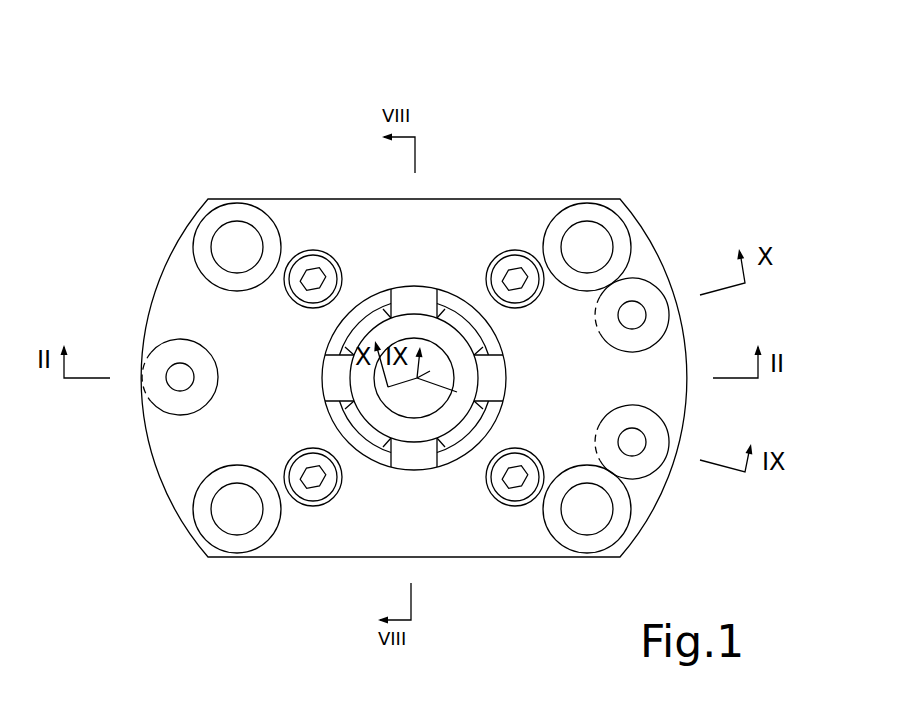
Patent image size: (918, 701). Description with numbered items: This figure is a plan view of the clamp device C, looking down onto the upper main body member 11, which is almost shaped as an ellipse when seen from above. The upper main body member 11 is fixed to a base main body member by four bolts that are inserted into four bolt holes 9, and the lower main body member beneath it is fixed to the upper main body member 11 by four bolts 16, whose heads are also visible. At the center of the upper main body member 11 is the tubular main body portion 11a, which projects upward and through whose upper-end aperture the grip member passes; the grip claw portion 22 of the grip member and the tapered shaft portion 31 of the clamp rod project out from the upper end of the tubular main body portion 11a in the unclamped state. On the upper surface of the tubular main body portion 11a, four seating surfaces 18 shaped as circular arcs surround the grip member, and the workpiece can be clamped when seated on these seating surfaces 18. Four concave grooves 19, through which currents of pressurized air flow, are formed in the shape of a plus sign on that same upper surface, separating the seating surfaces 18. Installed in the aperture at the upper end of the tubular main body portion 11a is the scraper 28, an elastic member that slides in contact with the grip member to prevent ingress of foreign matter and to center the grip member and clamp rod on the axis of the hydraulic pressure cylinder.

The bolt holes 9 is at (226, 511).
The upper main body member 11 is at (522, 196).
The tubular main body portion 11a is at (422, 289).
The bolts 16 is at (315, 505).
The seating surfaces 18 is at (484, 331).
The concave grooves 19 is at (488, 362).
The grip claw portion 22 is at (483, 423).
The scraper 28 is at (365, 413).
The tapered shaft portion 31 is at (398, 402).
The clamp device C is at (688, 186).